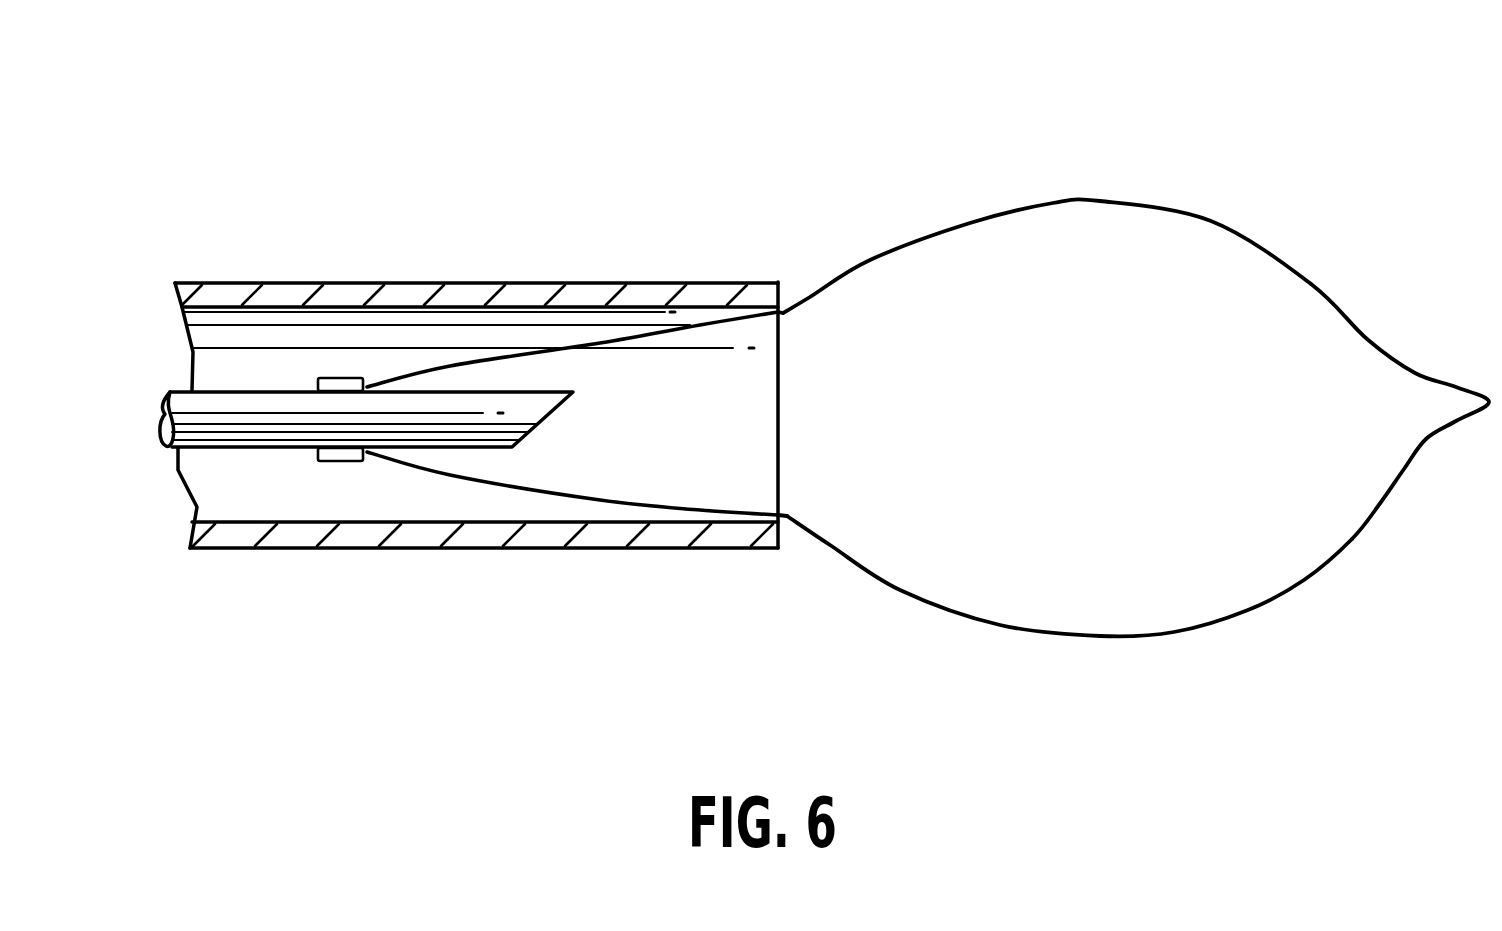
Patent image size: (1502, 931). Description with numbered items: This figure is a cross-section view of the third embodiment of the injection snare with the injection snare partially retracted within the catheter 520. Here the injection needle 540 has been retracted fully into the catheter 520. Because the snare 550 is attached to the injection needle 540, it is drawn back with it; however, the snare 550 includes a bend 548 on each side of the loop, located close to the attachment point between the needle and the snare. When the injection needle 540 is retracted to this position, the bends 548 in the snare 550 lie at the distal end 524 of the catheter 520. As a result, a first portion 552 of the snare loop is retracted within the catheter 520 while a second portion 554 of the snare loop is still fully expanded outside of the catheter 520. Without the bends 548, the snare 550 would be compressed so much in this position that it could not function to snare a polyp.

The catheter 520 is at (522, 282).
The distal end 524 is at (778, 283).
The injection needle 540 is at (243, 447).
The bend 548 is at (787, 301).
The snare 550 is at (1197, 196).
The first portion 552 is at (520, 483).
The second portion 554 is at (1316, 286).